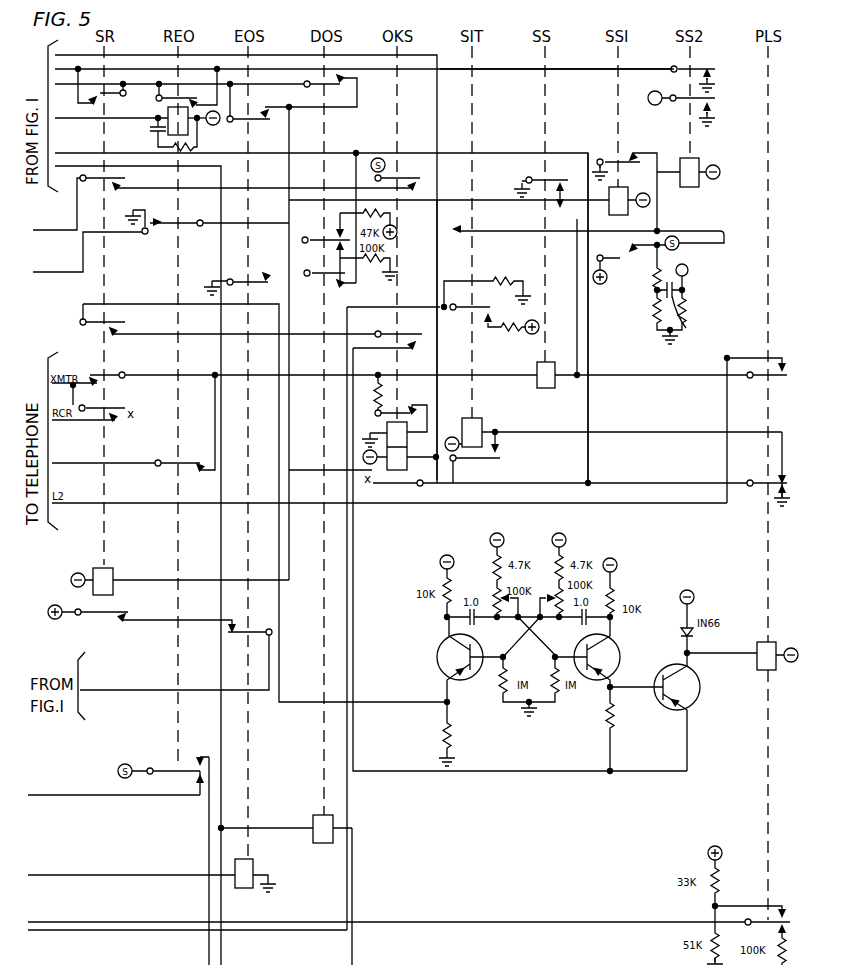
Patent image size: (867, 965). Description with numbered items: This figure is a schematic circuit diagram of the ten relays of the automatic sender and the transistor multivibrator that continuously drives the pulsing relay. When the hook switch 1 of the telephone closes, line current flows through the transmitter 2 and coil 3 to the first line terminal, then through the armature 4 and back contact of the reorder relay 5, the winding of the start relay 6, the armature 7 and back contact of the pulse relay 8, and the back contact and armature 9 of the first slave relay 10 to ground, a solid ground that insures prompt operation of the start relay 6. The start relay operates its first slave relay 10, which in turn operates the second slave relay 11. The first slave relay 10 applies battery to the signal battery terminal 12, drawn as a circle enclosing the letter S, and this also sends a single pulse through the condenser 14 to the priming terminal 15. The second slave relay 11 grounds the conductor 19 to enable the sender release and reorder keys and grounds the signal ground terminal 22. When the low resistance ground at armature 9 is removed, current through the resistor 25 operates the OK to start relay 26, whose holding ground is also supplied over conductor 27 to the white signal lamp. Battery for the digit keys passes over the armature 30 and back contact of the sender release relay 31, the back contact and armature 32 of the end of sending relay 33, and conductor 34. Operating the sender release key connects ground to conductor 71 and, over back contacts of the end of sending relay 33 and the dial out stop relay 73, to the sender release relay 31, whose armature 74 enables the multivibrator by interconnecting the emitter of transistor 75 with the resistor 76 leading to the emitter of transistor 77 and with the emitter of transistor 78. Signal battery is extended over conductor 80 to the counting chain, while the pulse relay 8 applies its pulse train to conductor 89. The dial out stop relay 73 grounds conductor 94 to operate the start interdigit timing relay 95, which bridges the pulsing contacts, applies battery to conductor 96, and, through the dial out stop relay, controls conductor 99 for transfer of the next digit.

The hook switch 1 is at (420, 265).
The transmitter 2 is at (384, 65).
The coil 3 is at (196, 80).
The armature 4 is at (168, 462).
The REO relay 5 is at (207, 138).
The SS relay 6 is at (537, 380).
The armature 7 is at (780, 380).
The PLS relay 8 is at (780, 648).
The armature 9 is at (608, 156).
The SS1 relay 10 is at (626, 207).
The SS2 relay 11 is at (700, 167).
The signal battery terminal 12 is at (680, 238).
The condenser 14 is at (684, 333).
The priming terminal 15 is at (688, 266).
The conductor 19 is at (497, 70).
The signal ground terminal 22 is at (658, 94).
The resistor 25 is at (390, 397).
The OKS relay 26 is at (398, 440).
The conductor 27 is at (437, 263).
The armature 30 is at (91, 616).
The SR relay 31 is at (113, 590).
The armature 32 is at (237, 636).
The EOS relay 33 is at (253, 862).
The conductor 34 is at (103, 690).
The conductor 71 is at (131, 88).
The DOS relay 73 is at (314, 818).
The armature 74 is at (97, 325).
The transistor 75 is at (450, 648).
The resistor 76 is at (620, 729).
The transistor 77 is at (610, 650).
The transistor 78 is at (700, 681).
The conductor 80 is at (38, 232).
The conductor 89 is at (524, 922).
The conductor 94 is at (590, 414).
The SIT relay 95 is at (482, 425).
The conductor 96 is at (402, 307).
The conductor 99 is at (36, 276).